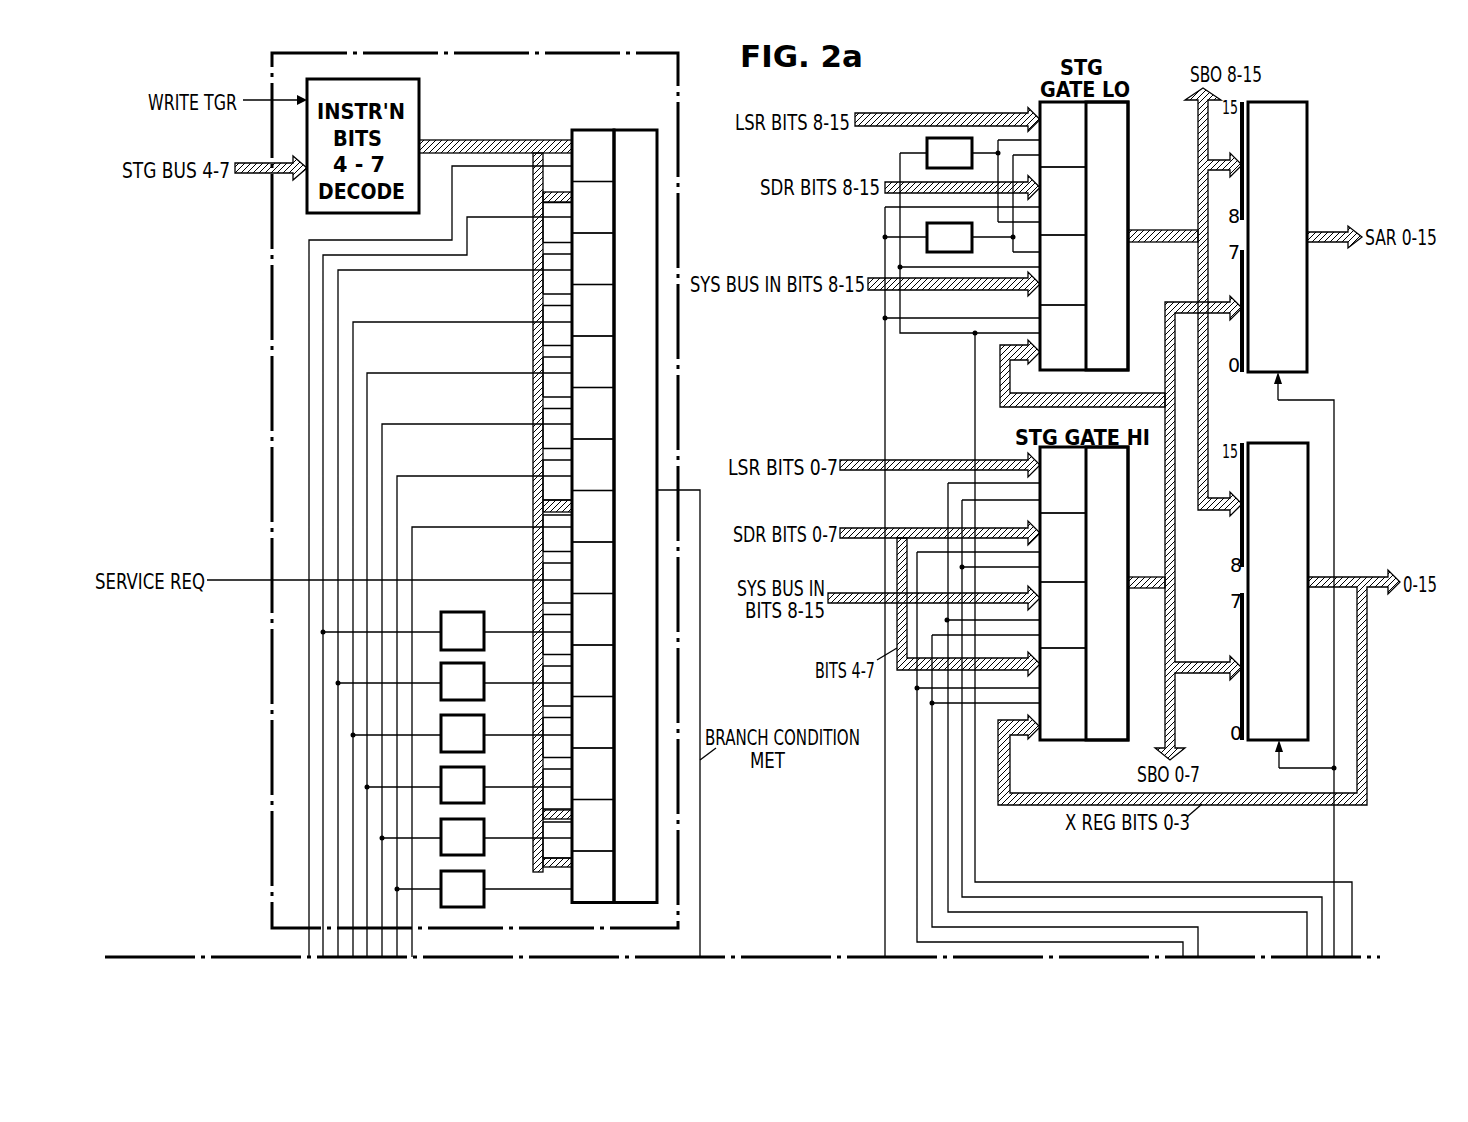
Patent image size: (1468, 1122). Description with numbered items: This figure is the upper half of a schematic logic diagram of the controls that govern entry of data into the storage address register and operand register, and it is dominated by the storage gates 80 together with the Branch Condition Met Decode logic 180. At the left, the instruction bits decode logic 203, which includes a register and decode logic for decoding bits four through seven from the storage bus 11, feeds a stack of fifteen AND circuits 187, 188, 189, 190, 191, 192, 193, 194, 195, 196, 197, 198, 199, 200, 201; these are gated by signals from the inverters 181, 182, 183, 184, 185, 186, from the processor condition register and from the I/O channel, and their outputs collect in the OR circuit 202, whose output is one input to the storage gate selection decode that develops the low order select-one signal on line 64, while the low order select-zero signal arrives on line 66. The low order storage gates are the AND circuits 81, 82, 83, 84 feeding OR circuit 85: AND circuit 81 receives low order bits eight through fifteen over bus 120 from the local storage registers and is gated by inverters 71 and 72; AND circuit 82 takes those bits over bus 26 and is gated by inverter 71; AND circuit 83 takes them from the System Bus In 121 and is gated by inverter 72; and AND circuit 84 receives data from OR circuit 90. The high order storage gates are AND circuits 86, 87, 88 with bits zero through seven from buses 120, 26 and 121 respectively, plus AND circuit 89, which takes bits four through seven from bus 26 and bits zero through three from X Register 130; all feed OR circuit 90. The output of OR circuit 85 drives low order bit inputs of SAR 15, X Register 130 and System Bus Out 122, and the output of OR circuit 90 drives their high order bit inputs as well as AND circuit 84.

The storage bus 11 is at (280, 162).
The SAR 15 is at (1287, 166).
The bus 26 is at (895, 182).
The line 64 is at (887, 910).
The line 66 is at (975, 852).
The inverter 71 is at (945, 138).
The inverter 72 is at (927, 227).
The storage gates 80 is at (1152, 194).
The AND circuit 81 is at (1083, 138).
The AND circuit 82 is at (1078, 194).
The AND circuit 83 is at (1080, 291).
The AND circuit 84 is at (1083, 340).
The OR circuit 85 is at (1120, 347).
The AND circuit 86 is at (1083, 488).
The AND circuit 87 is at (1078, 543).
The AND circuit 88 is at (1080, 639).
The AND circuit 89 is at (1075, 677).
The OR circuit 90 is at (1122, 707).
The bus 120 is at (882, 114).
The System Bus In 121 is at (945, 291).
The System Bus Out 122 is at (1198, 118).
The X Register 130 is at (1290, 484).
The Branch Condition Met Decode logic 180 is at (678, 212).
The inverter 181 is at (477, 618).
The inverter 182 is at (477, 669).
The inverter 183 is at (477, 721).
The inverter 184 is at (477, 773).
The inverter 185 is at (477, 825).
The inverter 186 is at (477, 877).
The AND circuit 187 is at (612, 162).
The AND circuit 188 is at (612, 214).
The AND circuit 189 is at (612, 265).
The AND circuit 190 is at (612, 316).
The AND circuit 191 is at (612, 368).
The AND circuit 192 is at (612, 420).
The AND circuit 193 is at (612, 471).
The AND circuit 194 is at (612, 522).
The AND circuit 195 is at (612, 574).
The AND circuit 196 is at (612, 626).
The AND circuit 197 is at (612, 677).
The AND circuit 198 is at (612, 728).
The AND circuit 199 is at (612, 780).
The AND circuit 200 is at (612, 832).
The AND circuit 201 is at (612, 883).
The OR circuit 202 is at (657, 384).
The instruction bits 4-7 decode logic 203 is at (419, 131).